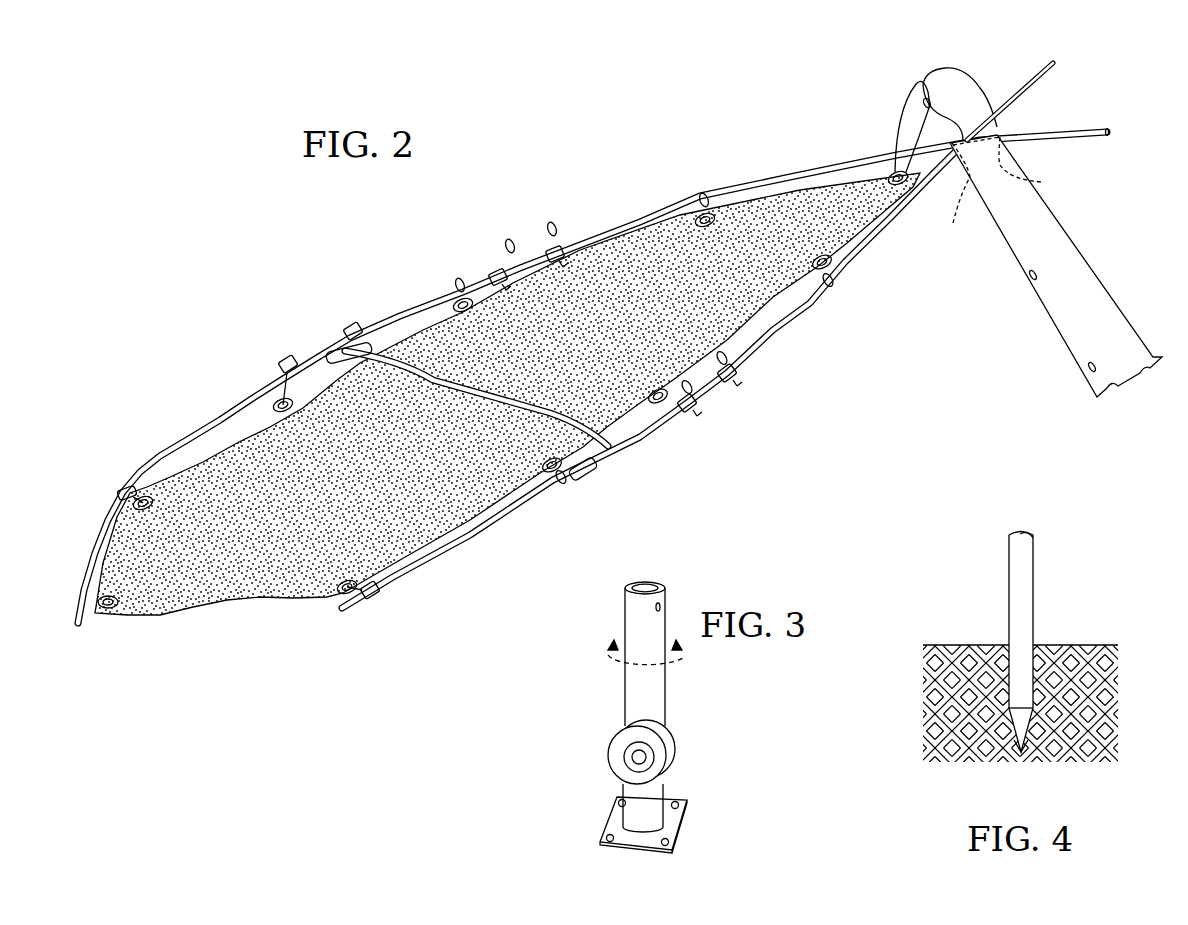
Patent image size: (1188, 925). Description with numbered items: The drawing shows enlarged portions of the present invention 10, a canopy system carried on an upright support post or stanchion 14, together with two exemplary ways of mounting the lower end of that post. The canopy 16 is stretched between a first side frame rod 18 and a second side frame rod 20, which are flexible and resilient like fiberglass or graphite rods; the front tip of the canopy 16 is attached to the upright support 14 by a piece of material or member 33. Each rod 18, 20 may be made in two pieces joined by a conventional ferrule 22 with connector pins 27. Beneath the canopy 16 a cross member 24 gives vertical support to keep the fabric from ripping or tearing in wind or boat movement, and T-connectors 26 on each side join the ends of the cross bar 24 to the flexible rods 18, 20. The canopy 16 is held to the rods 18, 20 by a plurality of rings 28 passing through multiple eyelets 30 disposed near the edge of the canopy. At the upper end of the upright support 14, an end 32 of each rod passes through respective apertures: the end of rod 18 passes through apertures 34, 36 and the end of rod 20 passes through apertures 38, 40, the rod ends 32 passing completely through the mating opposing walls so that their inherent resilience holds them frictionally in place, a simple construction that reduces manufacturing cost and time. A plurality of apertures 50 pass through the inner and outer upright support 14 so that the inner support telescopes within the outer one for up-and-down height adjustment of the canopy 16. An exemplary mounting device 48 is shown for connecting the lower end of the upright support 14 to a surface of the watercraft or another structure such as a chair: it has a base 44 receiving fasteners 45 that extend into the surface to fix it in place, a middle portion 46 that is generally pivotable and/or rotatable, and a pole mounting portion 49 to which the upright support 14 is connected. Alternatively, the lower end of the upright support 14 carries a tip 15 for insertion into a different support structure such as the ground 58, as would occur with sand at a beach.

In FIG. 2, the present invention 10 is at (644, 106).
In FIG. 2, the upright support post 14 is at (1080, 272).
In FIG. 4, the upright support post 14 is at (1022, 592).
In FIG. 4, the tip 15 is at (1018, 738).
In FIG. 2, the canopy 16 is at (228, 617).
In FIG. 2, the first side frame member 18 is at (792, 168).
In FIG. 2, the second side frame member 20 is at (806, 305).
In FIG. 2, the ferrule 22 is at (551, 252).
In FIG. 2, the cross member 24 is at (432, 362).
In FIG. 2, the T-connectors 26 is at (345, 348).
In FIG. 2, the connector pins 27 is at (508, 247).
In FIG. 2, the rings 28 is at (278, 368).
In FIG. 2, the eyelets 30 is at (250, 428).
In FIG. 2, the rod end 32 is at (1058, 62).
In FIG. 2, the attachment member 33 is at (895, 128).
In FIG. 2, the aperture 34 is at (938, 88).
In FIG. 2, the aperture 36 is at (1040, 183).
In FIG. 2, the aperture 38 is at (954, 197).
In FIG. 2, the aperture 40 is at (983, 110).
In FIG. 3, the base 44 is at (672, 827).
In FIG. 3, the fasteners 45 is at (678, 797).
In FIG. 3, the middle portion 46 is at (662, 752).
In FIG. 3, the mounting device 48 is at (692, 725).
In FIG. 3, the pole mounting portion 49 is at (648, 683).
In FIG. 2, the apertures 50 is at (1030, 275).
In FIG. 4, the ground 58 is at (968, 645).